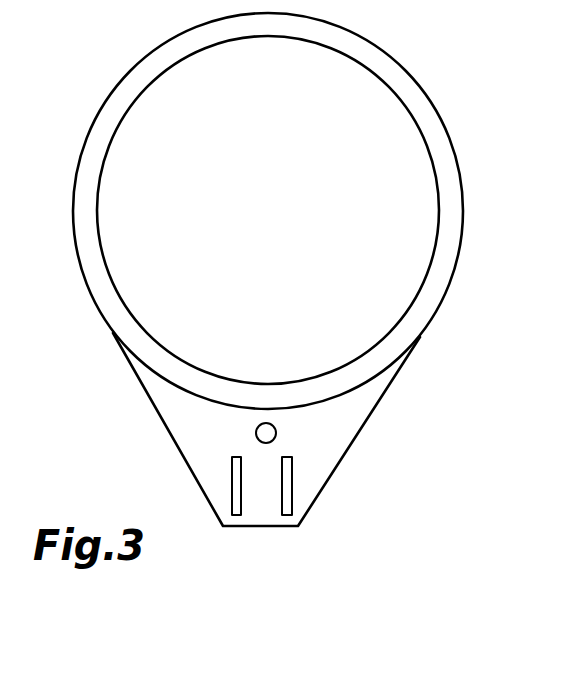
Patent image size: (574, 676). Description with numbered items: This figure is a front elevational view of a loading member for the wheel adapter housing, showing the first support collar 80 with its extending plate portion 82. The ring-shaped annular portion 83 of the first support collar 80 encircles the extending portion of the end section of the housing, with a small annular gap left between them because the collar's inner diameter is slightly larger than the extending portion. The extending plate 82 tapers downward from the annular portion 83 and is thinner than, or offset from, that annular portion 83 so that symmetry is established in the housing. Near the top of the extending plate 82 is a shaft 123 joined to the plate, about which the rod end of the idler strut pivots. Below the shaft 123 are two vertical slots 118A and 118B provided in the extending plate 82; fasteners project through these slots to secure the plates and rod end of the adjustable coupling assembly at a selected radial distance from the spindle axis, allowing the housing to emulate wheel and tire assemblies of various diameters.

The first support collar 80 is at (428, 92).
The annular portion 83 is at (463, 243).
The extending plate portion 82 is at (368, 418).
The shaft 123 is at (256, 430).
The vertical slot 118A is at (232, 472).
The vertical slot 118B is at (292, 472).